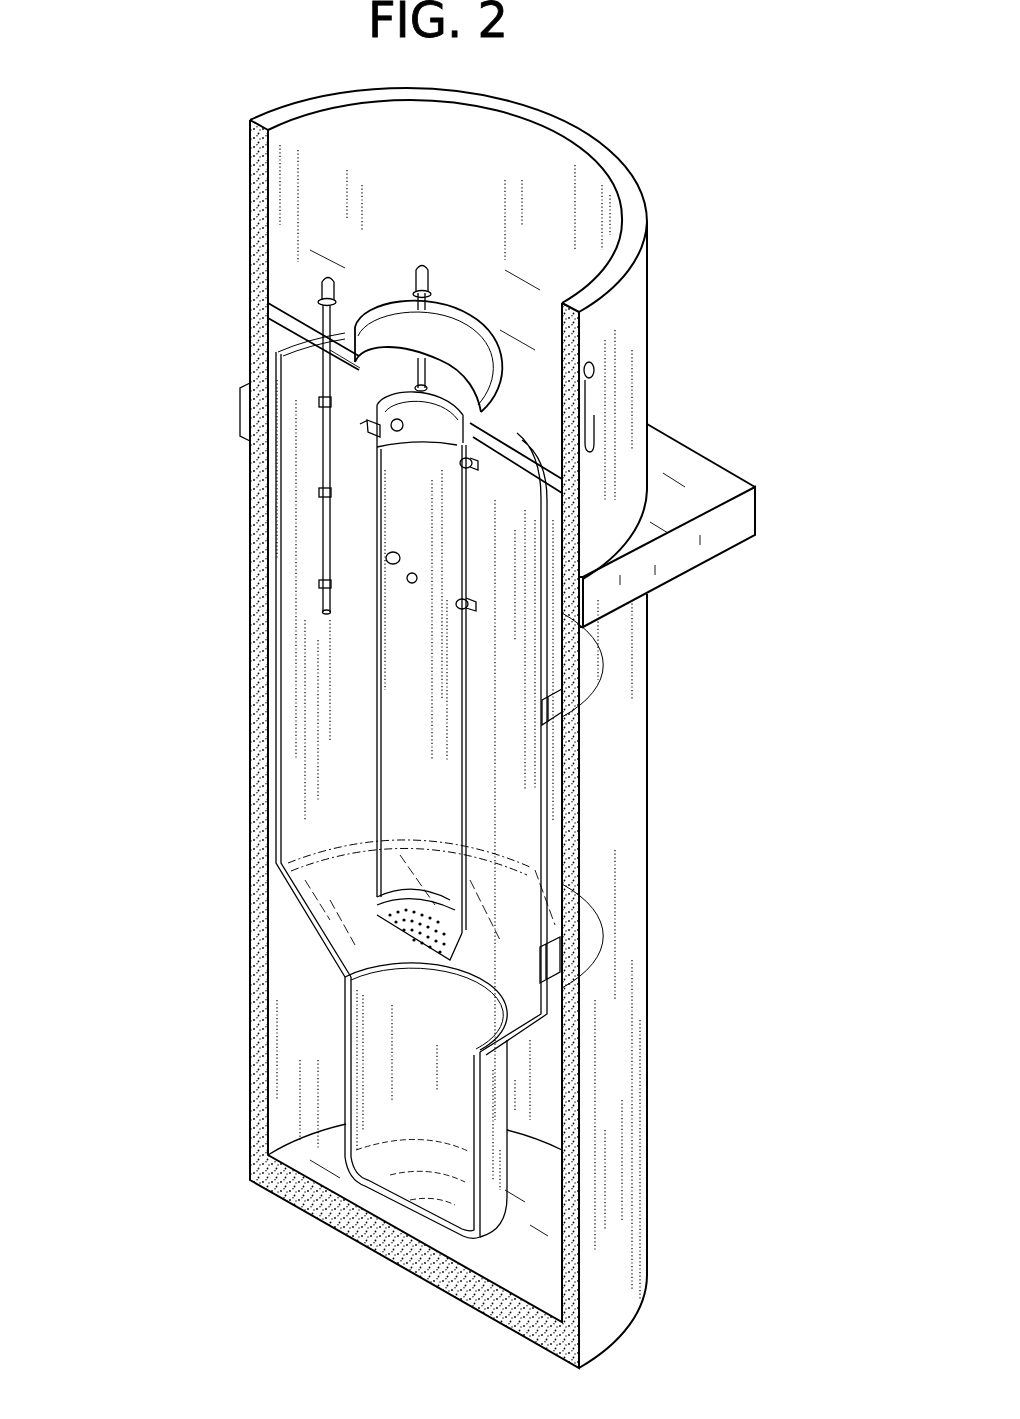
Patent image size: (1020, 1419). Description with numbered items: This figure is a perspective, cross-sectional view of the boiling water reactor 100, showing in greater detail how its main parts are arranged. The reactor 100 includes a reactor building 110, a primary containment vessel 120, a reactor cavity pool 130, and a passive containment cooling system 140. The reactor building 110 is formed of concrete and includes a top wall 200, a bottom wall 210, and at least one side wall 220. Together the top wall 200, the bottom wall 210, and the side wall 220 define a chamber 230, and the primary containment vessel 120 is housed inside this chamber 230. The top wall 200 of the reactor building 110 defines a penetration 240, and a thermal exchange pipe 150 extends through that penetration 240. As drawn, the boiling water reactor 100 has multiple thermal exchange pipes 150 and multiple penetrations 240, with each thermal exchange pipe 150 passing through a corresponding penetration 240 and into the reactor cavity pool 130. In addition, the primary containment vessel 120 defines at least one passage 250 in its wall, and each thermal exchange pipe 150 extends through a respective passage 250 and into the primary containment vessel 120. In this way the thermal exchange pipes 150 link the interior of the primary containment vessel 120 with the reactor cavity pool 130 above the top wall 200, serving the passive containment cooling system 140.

The boiling water reactor 100 is at (200, 441).
The reactor building 110 is at (570, 763).
The primary containment vessel 120 is at (553, 712).
The reactor cavity pool 130 is at (557, 228).
The passive containment cooling system 140 is at (417, 262).
The thermal exchange pipe 150 is at (300, 368).
The top wall 200 is at (517, 452).
The bottom wall 210 is at (463, 1287).
The side wall 220 is at (570, 1107).
The chamber 230 is at (533, 1047).
The penetration 240 is at (425, 292).
The passage 250 is at (590, 453).